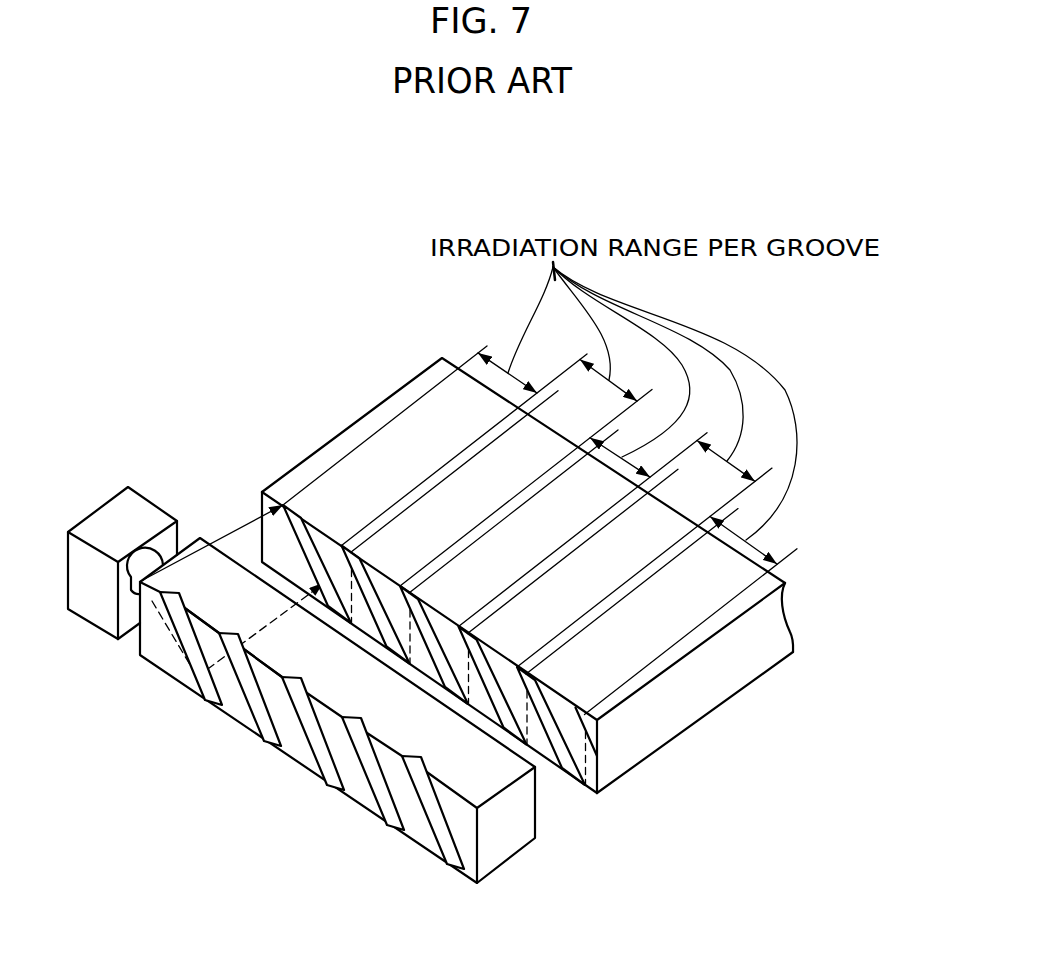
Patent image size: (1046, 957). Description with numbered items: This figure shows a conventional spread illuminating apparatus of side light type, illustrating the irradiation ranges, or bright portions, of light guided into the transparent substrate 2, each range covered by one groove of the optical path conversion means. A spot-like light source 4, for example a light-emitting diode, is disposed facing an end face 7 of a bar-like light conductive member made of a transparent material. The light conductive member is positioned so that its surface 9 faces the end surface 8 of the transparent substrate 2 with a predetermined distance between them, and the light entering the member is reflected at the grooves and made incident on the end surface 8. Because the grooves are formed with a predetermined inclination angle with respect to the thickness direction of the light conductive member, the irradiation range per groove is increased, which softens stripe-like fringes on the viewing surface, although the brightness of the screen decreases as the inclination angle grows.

The transparent substrate 2 is at (529, 640).
The spot-like light source 4 is at (160, 485).
The end face 7 is at (205, 552).
The end surface 8 is at (548, 748).
The surface 9 is at (135, 522).